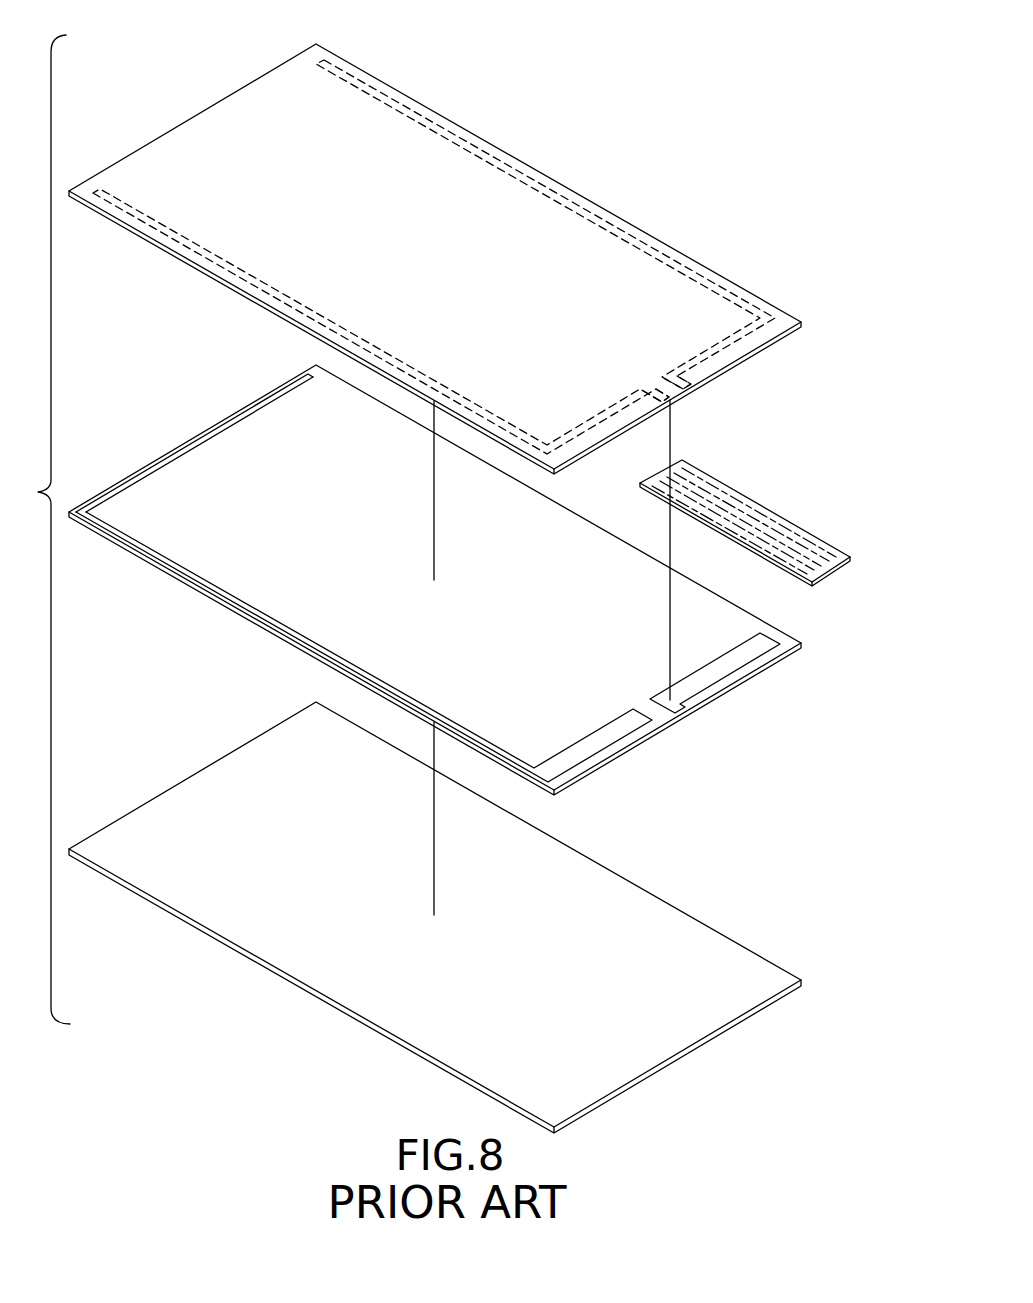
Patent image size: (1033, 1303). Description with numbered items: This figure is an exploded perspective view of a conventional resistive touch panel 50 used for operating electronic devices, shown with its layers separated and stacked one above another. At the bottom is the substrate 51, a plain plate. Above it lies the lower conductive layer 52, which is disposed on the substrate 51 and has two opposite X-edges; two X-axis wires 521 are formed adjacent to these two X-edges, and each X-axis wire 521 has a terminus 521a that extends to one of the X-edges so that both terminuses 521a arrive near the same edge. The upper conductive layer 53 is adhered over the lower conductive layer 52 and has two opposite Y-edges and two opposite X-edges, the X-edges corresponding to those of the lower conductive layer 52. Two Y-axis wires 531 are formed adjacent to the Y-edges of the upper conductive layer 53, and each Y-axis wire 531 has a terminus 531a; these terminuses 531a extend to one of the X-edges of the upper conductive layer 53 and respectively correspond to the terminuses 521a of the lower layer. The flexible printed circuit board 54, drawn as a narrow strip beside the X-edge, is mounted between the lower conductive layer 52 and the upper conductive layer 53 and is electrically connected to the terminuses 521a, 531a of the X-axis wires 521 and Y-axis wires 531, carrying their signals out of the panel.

The touch panel 50 is at (137, 357).
The substrate 51 is at (578, 872).
The lower conductive layer 52 is at (548, 517).
The X-axis wire 521 is at (190, 442).
The terminus 521a is at (320, 656).
The upper conductive layer 53 is at (545, 174).
The Y-axis wire 531 is at (577, 198).
The terminus 531a is at (722, 350).
The flexible printed circuit board 54 is at (752, 507).